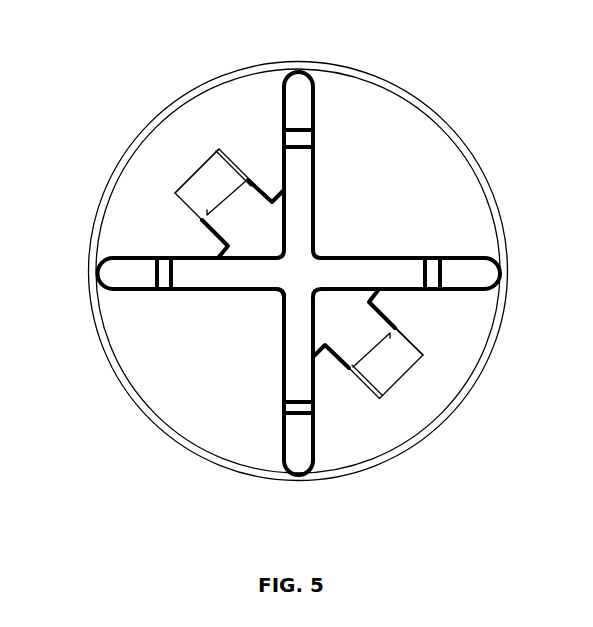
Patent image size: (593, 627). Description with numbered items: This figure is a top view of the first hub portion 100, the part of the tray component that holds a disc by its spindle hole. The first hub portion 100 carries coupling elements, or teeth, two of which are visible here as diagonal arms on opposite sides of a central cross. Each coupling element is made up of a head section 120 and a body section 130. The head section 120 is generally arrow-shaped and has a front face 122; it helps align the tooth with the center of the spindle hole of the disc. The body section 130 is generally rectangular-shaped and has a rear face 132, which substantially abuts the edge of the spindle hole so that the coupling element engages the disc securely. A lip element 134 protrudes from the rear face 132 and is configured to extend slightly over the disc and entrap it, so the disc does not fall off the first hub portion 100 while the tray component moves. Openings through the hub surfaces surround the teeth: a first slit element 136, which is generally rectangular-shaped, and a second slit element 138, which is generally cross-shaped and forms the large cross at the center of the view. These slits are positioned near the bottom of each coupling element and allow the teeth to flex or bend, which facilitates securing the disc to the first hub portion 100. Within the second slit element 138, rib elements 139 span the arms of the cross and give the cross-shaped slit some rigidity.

The first hub portion 100 is at (124, 79).
The head section 120 is at (330, 307).
The front face 122 is at (277, 247).
The body section 130 is at (397, 332).
The rear face 132 is at (222, 160).
The lip element 134 is at (210, 207).
The first slit element 136 is at (390, 368).
The second slit element 138 is at (297, 283).
The rib elements 139 is at (163, 272).